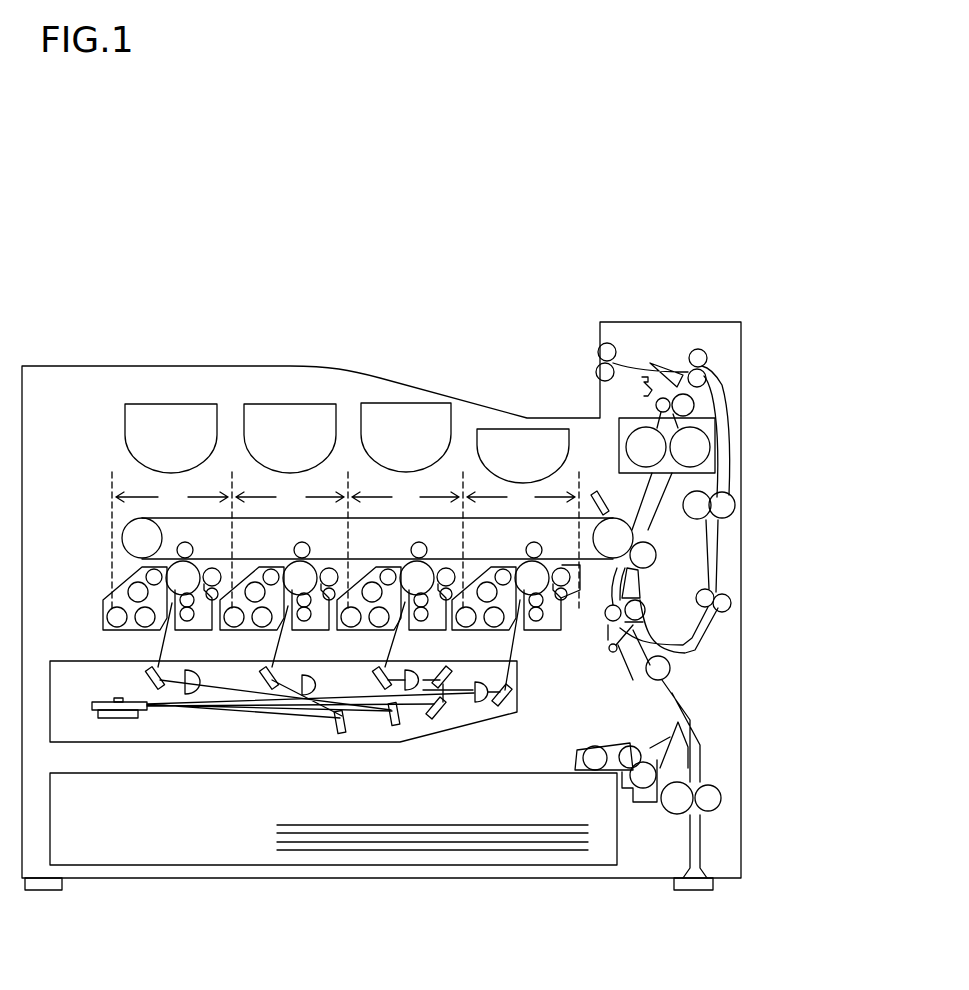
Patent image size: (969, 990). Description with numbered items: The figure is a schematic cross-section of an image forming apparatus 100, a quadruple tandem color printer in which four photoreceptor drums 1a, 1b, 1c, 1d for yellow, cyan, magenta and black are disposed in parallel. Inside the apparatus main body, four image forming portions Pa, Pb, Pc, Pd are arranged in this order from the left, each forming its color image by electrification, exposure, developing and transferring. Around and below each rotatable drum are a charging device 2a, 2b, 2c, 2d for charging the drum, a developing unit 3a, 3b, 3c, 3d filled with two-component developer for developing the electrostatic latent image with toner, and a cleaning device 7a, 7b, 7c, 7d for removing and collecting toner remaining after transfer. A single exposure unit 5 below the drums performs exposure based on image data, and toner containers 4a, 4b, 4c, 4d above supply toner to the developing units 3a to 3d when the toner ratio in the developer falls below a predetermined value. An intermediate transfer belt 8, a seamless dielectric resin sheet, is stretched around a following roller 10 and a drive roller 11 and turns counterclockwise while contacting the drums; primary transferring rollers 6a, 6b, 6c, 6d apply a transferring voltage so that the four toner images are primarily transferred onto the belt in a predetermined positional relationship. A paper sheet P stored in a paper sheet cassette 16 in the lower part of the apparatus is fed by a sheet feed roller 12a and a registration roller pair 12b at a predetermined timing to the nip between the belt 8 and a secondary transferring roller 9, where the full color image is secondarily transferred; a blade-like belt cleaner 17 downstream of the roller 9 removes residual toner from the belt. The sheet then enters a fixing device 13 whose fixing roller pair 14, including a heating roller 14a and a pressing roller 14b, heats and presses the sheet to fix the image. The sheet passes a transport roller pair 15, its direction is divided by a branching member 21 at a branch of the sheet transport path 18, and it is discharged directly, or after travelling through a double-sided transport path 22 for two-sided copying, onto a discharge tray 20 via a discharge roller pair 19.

The image forming apparatus 100 is at (195, 347).
The discharge tray 20 is at (425, 380).
The toner container 4a is at (171, 438).
The toner container 4b is at (290, 438).
The toner container 4c is at (406, 437).
The toner container 4d is at (523, 456).
The image forming portion Pa is at (172, 498).
The image forming portion Pb is at (290, 498).
The image forming portion Pc is at (405, 498).
The image forming portion Pd is at (521, 498).
The intermediate transfer belt 8 is at (150, 518).
The following roller 10 is at (135, 538).
The drive roller 11 is at (628, 521).
The belt cleaner 17 is at (592, 488).
The photoreceptor drum 1a is at (183, 578).
The photoreceptor drum 1b is at (300, 578).
The photoreceptor drum 1c is at (417, 578).
The photoreceptor drum 1d is at (532, 578).
The charging device 2a is at (188, 617).
The charging device 2b is at (305, 618).
The charging device 2c is at (422, 618).
The charging device 2d is at (540, 618).
The developing unit 3a is at (103, 612).
The developing unit 3b is at (257, 570).
The developing unit 3c is at (372, 572).
The developing unit 3d is at (487, 572).
The primary transferring roller 6a is at (188, 548).
The primary transferring roller 6b is at (305, 548).
The primary transferring roller 6c is at (422, 548).
The primary transferring roller 6d is at (536, 548).
The cleaning device 7a is at (234, 618).
The cleaning device 7b is at (351, 618).
The cleaning device 7c is at (466, 618).
The cleaning device 7d is at (570, 590).
The exposure unit 5 is at (87, 661).
The paper sheet cassette 16 is at (52, 773).
The paper sheet P is at (362, 828).
The sheet feed roller 12a is at (588, 756).
The registration roller pair 12b is at (610, 650).
The sheet transport path 18 is at (657, 510).
The secondary transferring roller 9 is at (652, 560).
The double-sided transport path 22 is at (716, 532).
The fixing device 13 is at (716, 447).
The fixing roller pair 14 is at (728, 476).
The heating roller 14a is at (735, 505).
The pressing roller 14b is at (690, 458).
The transport roller pair 15 is at (694, 405).
The branching member 21 is at (710, 360).
The discharge roller pair 19 is at (600, 350).